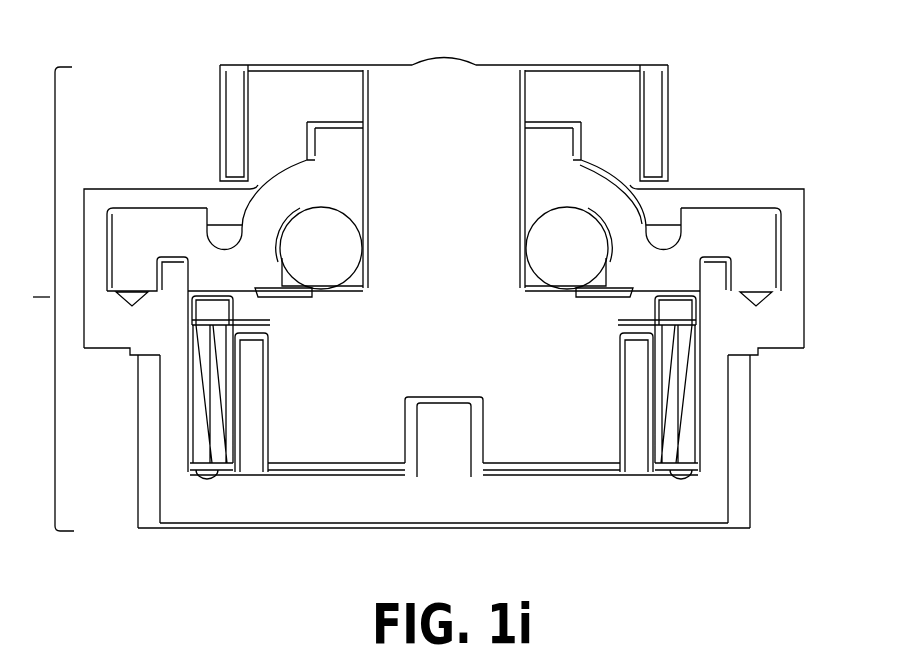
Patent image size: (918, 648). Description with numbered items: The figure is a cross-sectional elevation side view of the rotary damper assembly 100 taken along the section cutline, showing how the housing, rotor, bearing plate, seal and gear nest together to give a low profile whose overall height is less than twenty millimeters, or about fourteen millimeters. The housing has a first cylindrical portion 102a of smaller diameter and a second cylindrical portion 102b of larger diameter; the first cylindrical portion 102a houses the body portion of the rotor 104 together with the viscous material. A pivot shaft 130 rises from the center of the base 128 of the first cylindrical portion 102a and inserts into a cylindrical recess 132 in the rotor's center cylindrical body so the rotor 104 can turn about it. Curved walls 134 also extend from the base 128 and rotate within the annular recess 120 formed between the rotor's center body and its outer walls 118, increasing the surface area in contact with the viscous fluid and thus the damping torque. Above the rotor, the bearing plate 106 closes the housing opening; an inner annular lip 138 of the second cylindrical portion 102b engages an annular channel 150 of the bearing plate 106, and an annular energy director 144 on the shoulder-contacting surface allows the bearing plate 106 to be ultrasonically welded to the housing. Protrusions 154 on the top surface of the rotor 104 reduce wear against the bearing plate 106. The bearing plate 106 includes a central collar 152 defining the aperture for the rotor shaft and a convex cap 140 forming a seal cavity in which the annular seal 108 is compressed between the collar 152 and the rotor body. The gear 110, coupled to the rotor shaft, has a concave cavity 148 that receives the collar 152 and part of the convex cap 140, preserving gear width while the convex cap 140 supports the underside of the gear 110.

The rotary damper assembly 100 is at (848, 38).
The first cylindrical portion 102a is at (752, 455).
The second cylindrical portion 102b is at (807, 303).
The rotor 104 is at (402, 65).
The bearing plate 106 is at (152, 208).
The annular seal 108 is at (366, 245).
The gear 110 is at (665, 110).
The outer walls 118 is at (203, 473).
The annular recess 120 is at (268, 327).
The base 128 is at (323, 533).
The pivot shaft 130 is at (440, 460).
The cylindrical recess 132 is at (407, 397).
The curved walls 134 is at (243, 462).
The inner annular lip 138 is at (723, 282).
The convex cap 140 is at (605, 176).
The annular energy director 144 is at (768, 300).
The concave cavity 148 is at (621, 160).
The annular channel 150 is at (700, 267).
The collar 152 is at (530, 137).
The protrusions 154 is at (240, 296).